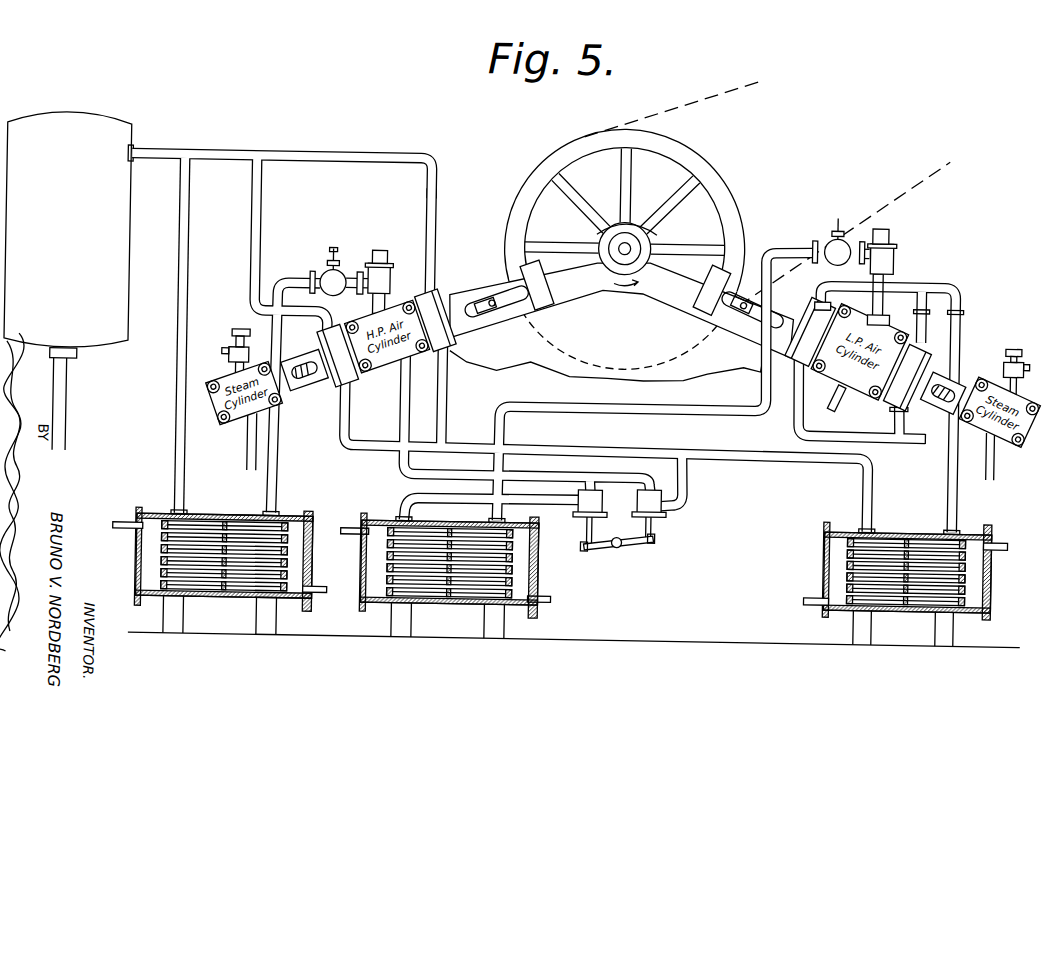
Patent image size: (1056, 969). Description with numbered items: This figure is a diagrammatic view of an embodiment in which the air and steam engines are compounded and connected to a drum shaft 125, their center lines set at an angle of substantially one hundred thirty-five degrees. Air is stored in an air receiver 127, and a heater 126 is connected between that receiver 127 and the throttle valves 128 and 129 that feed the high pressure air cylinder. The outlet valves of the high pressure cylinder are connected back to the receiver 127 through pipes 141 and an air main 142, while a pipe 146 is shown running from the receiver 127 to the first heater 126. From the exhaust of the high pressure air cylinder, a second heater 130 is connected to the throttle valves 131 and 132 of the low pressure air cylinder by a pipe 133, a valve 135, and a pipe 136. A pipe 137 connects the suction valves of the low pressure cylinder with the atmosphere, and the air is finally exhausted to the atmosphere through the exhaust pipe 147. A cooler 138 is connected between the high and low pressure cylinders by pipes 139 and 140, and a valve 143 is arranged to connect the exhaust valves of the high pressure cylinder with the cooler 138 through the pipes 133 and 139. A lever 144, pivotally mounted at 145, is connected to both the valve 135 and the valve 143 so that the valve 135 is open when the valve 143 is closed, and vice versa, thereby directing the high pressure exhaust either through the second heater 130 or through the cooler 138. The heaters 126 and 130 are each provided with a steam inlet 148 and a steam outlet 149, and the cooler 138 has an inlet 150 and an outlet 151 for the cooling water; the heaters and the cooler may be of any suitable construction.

The drum shaft 125 is at (627, 262).
The heater 126 is at (248, 512).
The air receiver 127 is at (92, 134).
The throttle valve 128 is at (326, 274).
The throttle valve 129 is at (377, 257).
The second heater 130 is at (472, 601).
The throttle valve 131 is at (829, 238).
The throttle valve 132 is at (892, 241).
The pipe 133 is at (404, 468).
The valve 135 is at (586, 512).
The pipe 136 is at (673, 413).
The pipe 137 is at (923, 438).
The cooler 138 is at (923, 519).
The pipe 139 is at (766, 458).
The pipe 140 is at (960, 328).
The pipes 141 is at (260, 218).
The air main 142 is at (226, 153).
The valve 143 is at (663, 511).
The lever 144 is at (608, 550).
The pivot 145 is at (625, 545).
The pipe 146 is at (176, 313).
The exhaust pipe 147 is at (841, 396).
The steam inlet 148 is at (322, 598).
The steam outlet 149 is at (127, 536).
The inlet 150 is at (814, 599).
The outlet 151 is at (1003, 543).